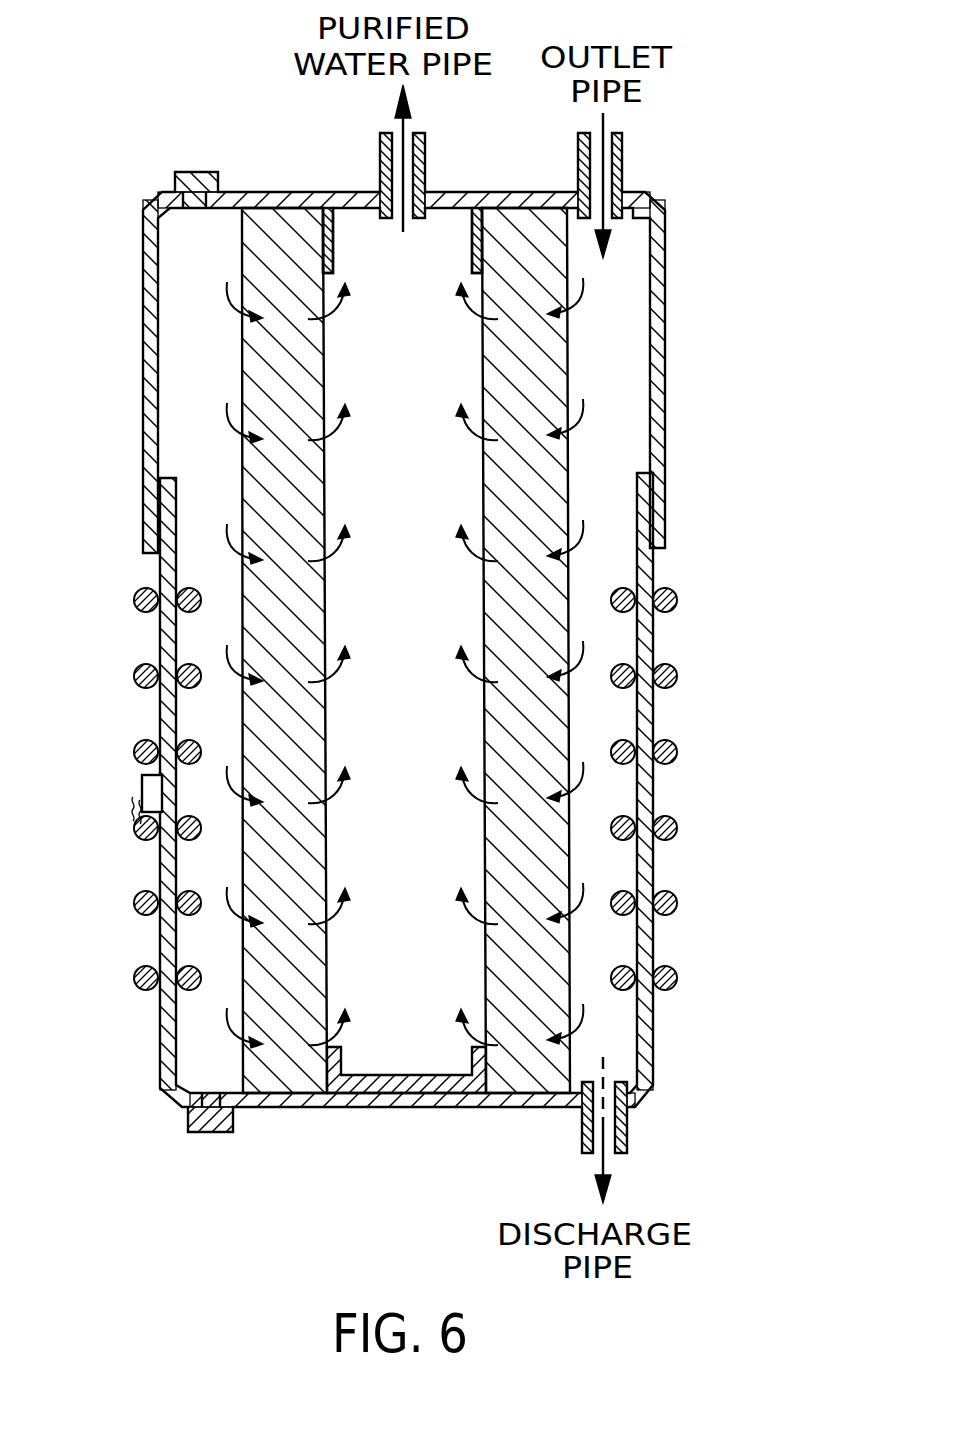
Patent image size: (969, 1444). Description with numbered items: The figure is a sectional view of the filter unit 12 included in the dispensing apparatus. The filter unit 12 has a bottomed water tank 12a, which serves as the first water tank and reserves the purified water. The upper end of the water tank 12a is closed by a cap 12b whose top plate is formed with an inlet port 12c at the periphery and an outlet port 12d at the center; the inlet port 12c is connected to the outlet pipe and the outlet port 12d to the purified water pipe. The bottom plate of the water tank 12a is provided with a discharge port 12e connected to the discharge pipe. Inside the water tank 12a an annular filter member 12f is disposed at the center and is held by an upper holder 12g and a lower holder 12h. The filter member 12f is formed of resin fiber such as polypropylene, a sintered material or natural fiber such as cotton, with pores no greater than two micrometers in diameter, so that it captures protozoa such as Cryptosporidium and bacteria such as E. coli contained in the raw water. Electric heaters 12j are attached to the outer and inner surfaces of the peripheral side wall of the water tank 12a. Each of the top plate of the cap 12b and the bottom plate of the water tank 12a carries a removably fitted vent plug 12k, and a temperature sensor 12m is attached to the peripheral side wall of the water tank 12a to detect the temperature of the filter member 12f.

The filter unit 12 is at (416, 648).
The water tank 12a is at (655, 937).
The cap 12b is at (665, 250).
The inlet port 12c is at (608, 180).
The outlet port 12d is at (405, 170).
The discharge port 12e is at (612, 1117).
The filter member 12f is at (317, 618).
The upper holder 12g is at (333, 258).
The lower holder 12h is at (400, 1075).
The electric heaters 12j is at (643, 718).
The vent plug 12k is at (205, 172).
The temperature sensor 12m is at (142, 783).